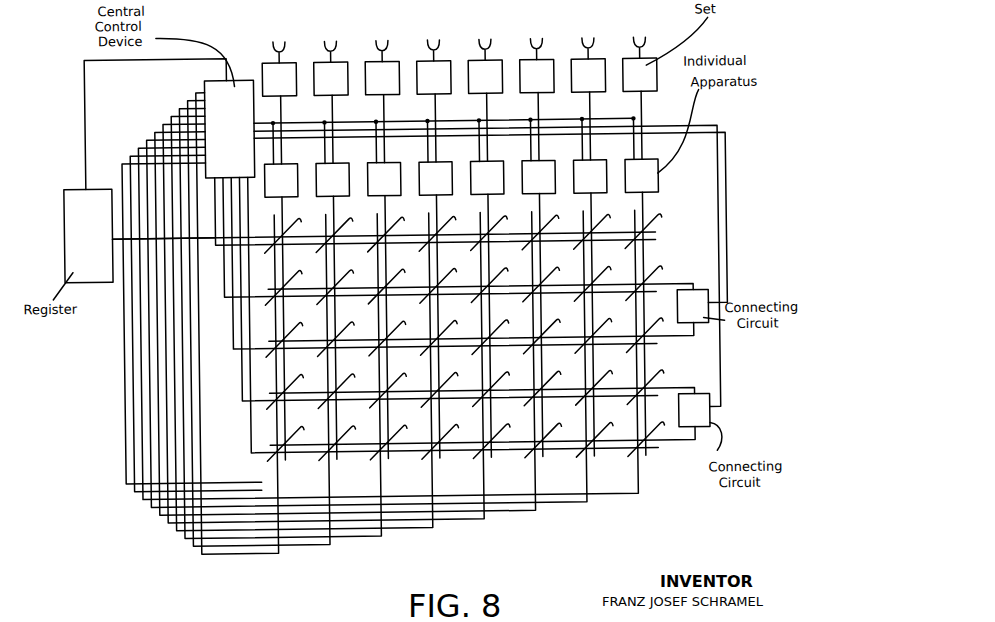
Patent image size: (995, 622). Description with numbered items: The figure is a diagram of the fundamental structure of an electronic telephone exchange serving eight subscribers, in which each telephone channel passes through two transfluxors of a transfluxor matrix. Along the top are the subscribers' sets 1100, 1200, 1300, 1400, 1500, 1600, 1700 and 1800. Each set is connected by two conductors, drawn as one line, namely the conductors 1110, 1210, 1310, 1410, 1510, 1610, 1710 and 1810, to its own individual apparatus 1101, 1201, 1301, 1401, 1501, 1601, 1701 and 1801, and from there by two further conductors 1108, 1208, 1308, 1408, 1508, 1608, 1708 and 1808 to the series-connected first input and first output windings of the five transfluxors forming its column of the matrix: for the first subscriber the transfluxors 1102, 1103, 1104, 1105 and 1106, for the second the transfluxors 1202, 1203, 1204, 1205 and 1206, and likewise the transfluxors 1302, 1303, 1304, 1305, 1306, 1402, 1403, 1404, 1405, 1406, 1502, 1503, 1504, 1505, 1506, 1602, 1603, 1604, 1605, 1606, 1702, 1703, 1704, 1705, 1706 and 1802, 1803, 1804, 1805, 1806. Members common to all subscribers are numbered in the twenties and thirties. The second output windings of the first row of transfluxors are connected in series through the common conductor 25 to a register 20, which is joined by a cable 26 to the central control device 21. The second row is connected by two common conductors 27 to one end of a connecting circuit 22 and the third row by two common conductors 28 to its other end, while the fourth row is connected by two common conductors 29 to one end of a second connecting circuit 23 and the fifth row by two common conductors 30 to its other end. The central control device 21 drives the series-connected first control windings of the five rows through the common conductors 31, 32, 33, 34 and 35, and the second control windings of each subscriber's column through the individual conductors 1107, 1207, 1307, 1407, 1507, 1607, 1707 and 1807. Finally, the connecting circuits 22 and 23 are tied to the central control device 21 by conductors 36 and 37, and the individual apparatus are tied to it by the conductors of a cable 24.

The register 20 is at (78, 245).
The central control device 21 is at (221, 136).
The connecting circuit 22 is at (682, 320).
The second connecting circuit 23 is at (682, 424).
The cable 24 is at (403, 121).
The common conductor 25 is at (210, 230).
The cable 26 is at (88, 106).
The common conductors 27 is at (680, 289).
The common conductors 28 is at (680, 341).
The common conductors 29 is at (680, 393).
The common conductors 30 is at (680, 445).
The common conductor 31 is at (428, 223).
The common conductor 32 is at (432, 245).
The common conductor 33 is at (437, 271).
The common conductor 34 is at (439, 299).
The common conductor 35 is at (447, 323).
The conductor 36 is at (716, 129).
The conductor 37 is at (722, 142).
The subscriber's set 1100 is at (286, 72).
The subscriber's set 1200 is at (338, 72).
The subscriber's set 1300 is at (389, 72).
The subscriber's set 1400 is at (440, 72).
The subscriber's set 1500 is at (492, 72).
The subscriber's set 1600 is at (544, 72).
The subscriber's set 1700 is at (595, 72).
The subscriber's set 1800 is at (646, 72).
The conductors 1110 is at (283, 151).
The conductors 1210 is at (334, 151).
The conductors 1310 is at (386, 151).
The conductors 1410 is at (438, 151).
The conductors 1510 is at (489, 151).
The conductors 1610 is at (540, 151).
The conductors 1710 is at (592, 151).
The conductors 1810 is at (644, 151).
The individual apparatus 1101 is at (269, 191).
The individual apparatus 1201 is at (320, 191).
The individual apparatus 1301 is at (372, 191).
The individual apparatus 1401 is at (424, 191).
The individual apparatus 1501 is at (475, 191).
The individual apparatus 1601 is at (526, 191).
The individual apparatus 1701 is at (578, 191).
The individual apparatus 1801 is at (630, 191).
The conductors 1108 is at (283, 208).
The conductors 1208 is at (334, 208).
The conductors 1308 is at (386, 208).
The conductors 1408 is at (438, 208).
The conductors 1508 is at (489, 208).
The conductors 1608 is at (540, 208).
The conductors 1708 is at (592, 208).
The conductors 1808 is at (644, 208).
The transfluxor 1102 is at (296, 235).
The transfluxor 1103 is at (294, 278).
The transfluxor 1104 is at (294, 330).
The transfluxor 1105 is at (295, 382).
The transfluxor 1106 is at (296, 434).
The transfluxor 1202 is at (348, 235).
The transfluxor 1203 is at (345, 278).
The transfluxor 1204 is at (346, 330).
The transfluxor 1205 is at (347, 382).
The transfluxor 1206 is at (347, 434).
The transfluxor 1302 is at (399, 234).
The transfluxor 1303 is at (397, 277).
The transfluxor 1304 is at (397, 329).
The transfluxor 1305 is at (398, 381).
The transfluxor 1306 is at (399, 433).
The transfluxor 1402 is at (451, 233).
The transfluxor 1403 is at (448, 276).
The transfluxor 1404 is at (449, 328).
The transfluxor 1405 is at (450, 380).
The transfluxor 1406 is at (450, 432).
The transfluxor 1502 is at (502, 233).
The transfluxor 1503 is at (500, 276).
The transfluxor 1504 is at (500, 328).
The transfluxor 1505 is at (501, 380).
The transfluxor 1506 is at (502, 432).
The transfluxor 1602 is at (554, 232).
The transfluxor 1603 is at (551, 275).
The transfluxor 1604 is at (552, 327).
The transfluxor 1605 is at (553, 379).
The transfluxor 1606 is at (553, 431).
The transfluxor 1702 is at (605, 231).
The transfluxor 1703 is at (603, 274).
The transfluxor 1704 is at (603, 326).
The transfluxor 1705 is at (604, 378).
The transfluxor 1706 is at (605, 430).
The transfluxor 1802 is at (657, 231).
The transfluxor 1803 is at (654, 274).
The transfluxor 1804 is at (655, 326).
The transfluxor 1805 is at (656, 378).
The transfluxor 1806 is at (656, 430).
The individual conductor 1107 is at (243, 336).
The individual conductor 1207 is at (265, 335).
The individual conductor 1307 is at (286, 335).
The individual conductor 1407 is at (308, 334).
The individual conductor 1507 is at (330, 334).
The individual conductor 1607 is at (351, 333).
The individual conductor 1707 is at (373, 333).
The individual conductor 1807 is at (410, 327).